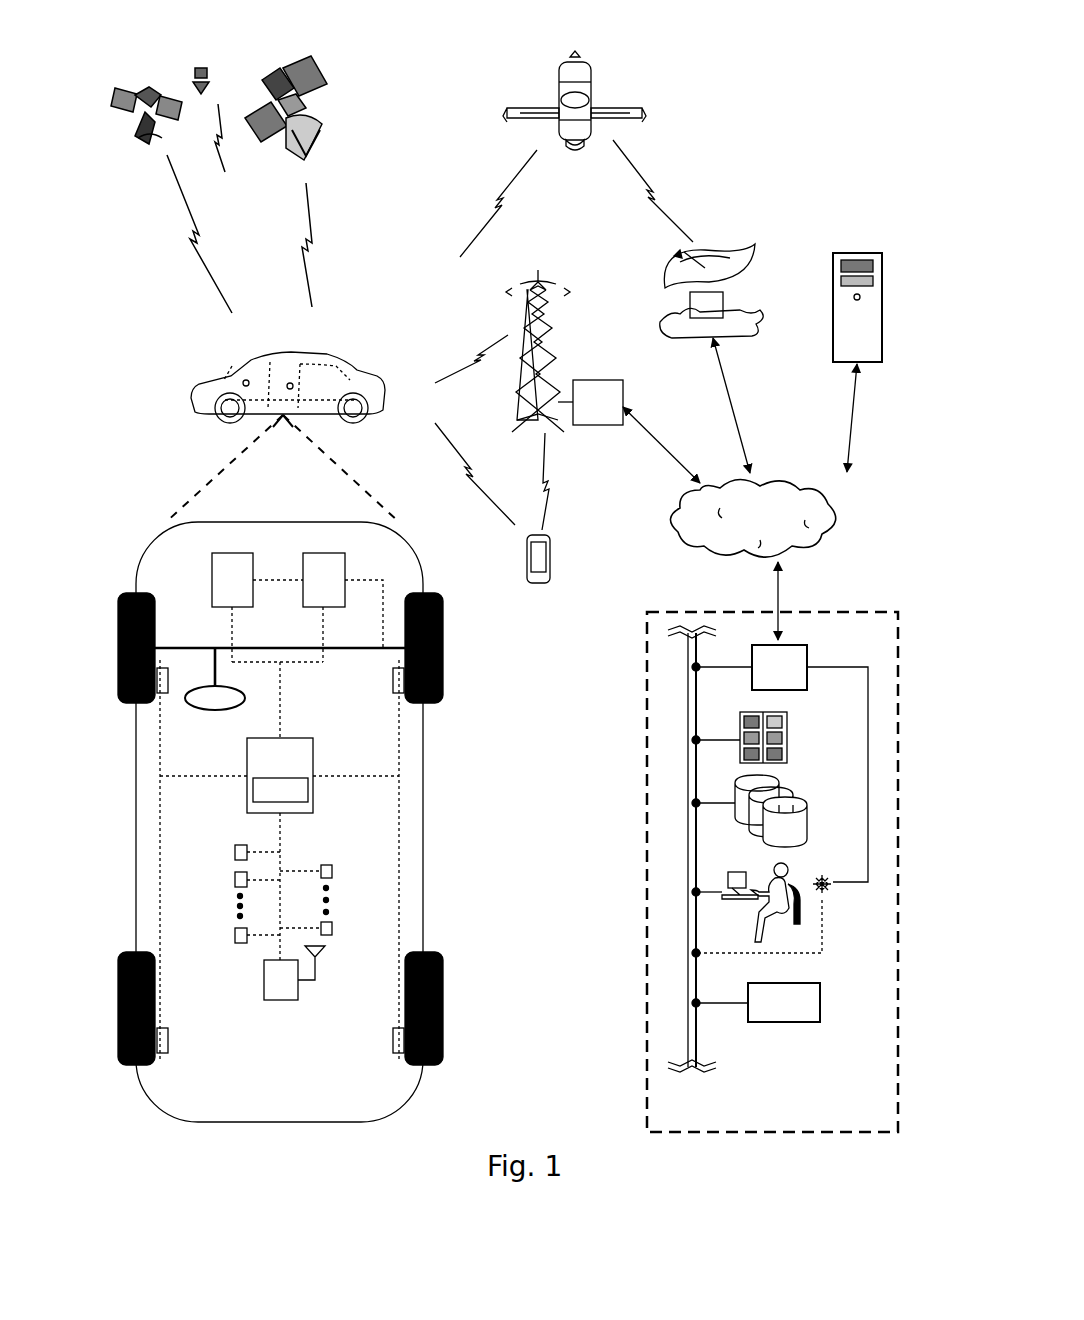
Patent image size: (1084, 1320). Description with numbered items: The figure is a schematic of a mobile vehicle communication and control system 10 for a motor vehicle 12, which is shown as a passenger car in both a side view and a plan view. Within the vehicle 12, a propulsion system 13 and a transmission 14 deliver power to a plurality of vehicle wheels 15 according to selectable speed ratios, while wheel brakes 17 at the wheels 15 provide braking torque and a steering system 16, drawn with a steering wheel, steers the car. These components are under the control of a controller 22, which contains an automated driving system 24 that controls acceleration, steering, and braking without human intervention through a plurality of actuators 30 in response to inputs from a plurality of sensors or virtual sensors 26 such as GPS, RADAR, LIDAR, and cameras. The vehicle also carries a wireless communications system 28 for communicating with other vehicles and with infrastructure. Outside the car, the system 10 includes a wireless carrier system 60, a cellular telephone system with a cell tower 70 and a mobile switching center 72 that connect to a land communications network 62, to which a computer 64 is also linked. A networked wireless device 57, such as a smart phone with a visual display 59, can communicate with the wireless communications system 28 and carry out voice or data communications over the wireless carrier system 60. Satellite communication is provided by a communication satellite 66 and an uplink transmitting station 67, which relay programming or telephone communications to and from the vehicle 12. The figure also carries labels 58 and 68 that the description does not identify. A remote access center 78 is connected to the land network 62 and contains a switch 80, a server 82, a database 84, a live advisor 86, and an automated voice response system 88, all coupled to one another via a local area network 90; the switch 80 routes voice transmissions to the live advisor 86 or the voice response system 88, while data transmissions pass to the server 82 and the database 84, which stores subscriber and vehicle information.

The mobile vehicle communication and control system 10 is at (812, 126).
The motor vehicle 12 is at (192, 398).
The propulsion system 13 is at (212, 584).
The transmission 14 is at (345, 560).
The vehicle wheels 15 is at (155, 618).
The steering system 16 is at (249, 730).
The wheel brakes 17 is at (162, 695).
The controller 22 is at (313, 780).
The automated driving system 24 is at (298, 815).
The sensors or virtual sensors 26 is at (234, 853).
The wireless communications system 28 is at (278, 1000).
The actuators 30 is at (332, 872).
The networked wireless device 57 is at (552, 570).
The wireless signal 58 is at (473, 445).
The visual display 59 is at (540, 563).
The wireless carrier system 60 is at (516, 429).
The land communications network 62 is at (871, 512).
The computer 64 is at (882, 320).
The communication satellite 66 is at (593, 82).
The uplink transmitting station 67 is at (739, 294).
The GPS satellites 68 is at (343, 90).
The cell tower 70 is at (548, 343).
The mobile switching center 72 is at (593, 388).
The remote access center 78 is at (762, 1133).
The switch 80 is at (782, 799).
The server 82 is at (787, 732).
The database 84 is at (807, 812).
The live advisor 86 is at (750, 923).
The automated voice response system 88 is at (820, 997).
The local area network 90 is at (698, 1043).